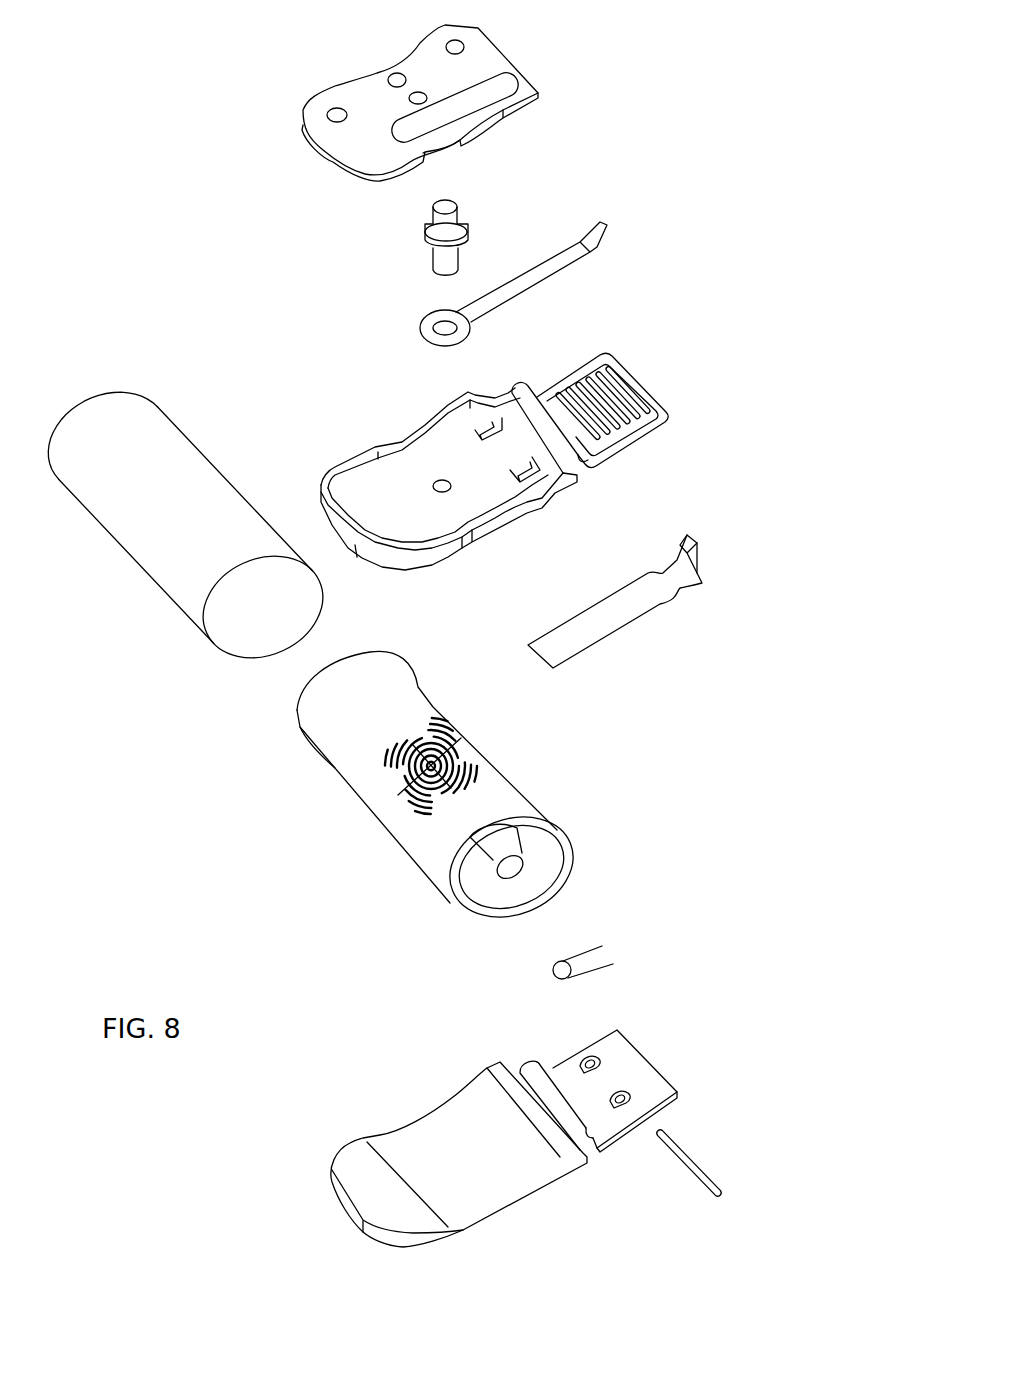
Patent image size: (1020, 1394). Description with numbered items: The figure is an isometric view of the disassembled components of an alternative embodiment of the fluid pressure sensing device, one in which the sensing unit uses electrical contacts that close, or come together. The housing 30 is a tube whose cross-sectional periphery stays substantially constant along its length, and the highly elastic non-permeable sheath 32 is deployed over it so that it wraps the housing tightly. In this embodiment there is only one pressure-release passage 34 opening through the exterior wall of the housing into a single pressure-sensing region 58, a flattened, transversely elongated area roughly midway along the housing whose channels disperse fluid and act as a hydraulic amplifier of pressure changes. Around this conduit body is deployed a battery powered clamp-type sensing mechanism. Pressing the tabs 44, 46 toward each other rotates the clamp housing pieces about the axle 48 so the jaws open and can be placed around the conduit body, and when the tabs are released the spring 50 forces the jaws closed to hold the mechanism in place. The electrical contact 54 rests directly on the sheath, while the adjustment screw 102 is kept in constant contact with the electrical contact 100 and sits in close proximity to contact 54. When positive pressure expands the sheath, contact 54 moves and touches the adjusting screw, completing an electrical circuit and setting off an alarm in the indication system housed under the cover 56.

The housing 30 is at (463, 798).
The sheath 32 is at (102, 448).
The pressure-release passage 34 is at (431, 766).
The tab 44 is at (620, 408).
The tab 46 is at (627, 1063).
The axle 48 is at (693, 1163).
The spring 50 is at (570, 960).
The electrical contact 54 is at (622, 610).
The cover 56 is at (493, 58).
The pressure-sensing region 58 is at (425, 776).
The electrical contact 100 is at (563, 265).
The adjustment screw 102 is at (455, 205).